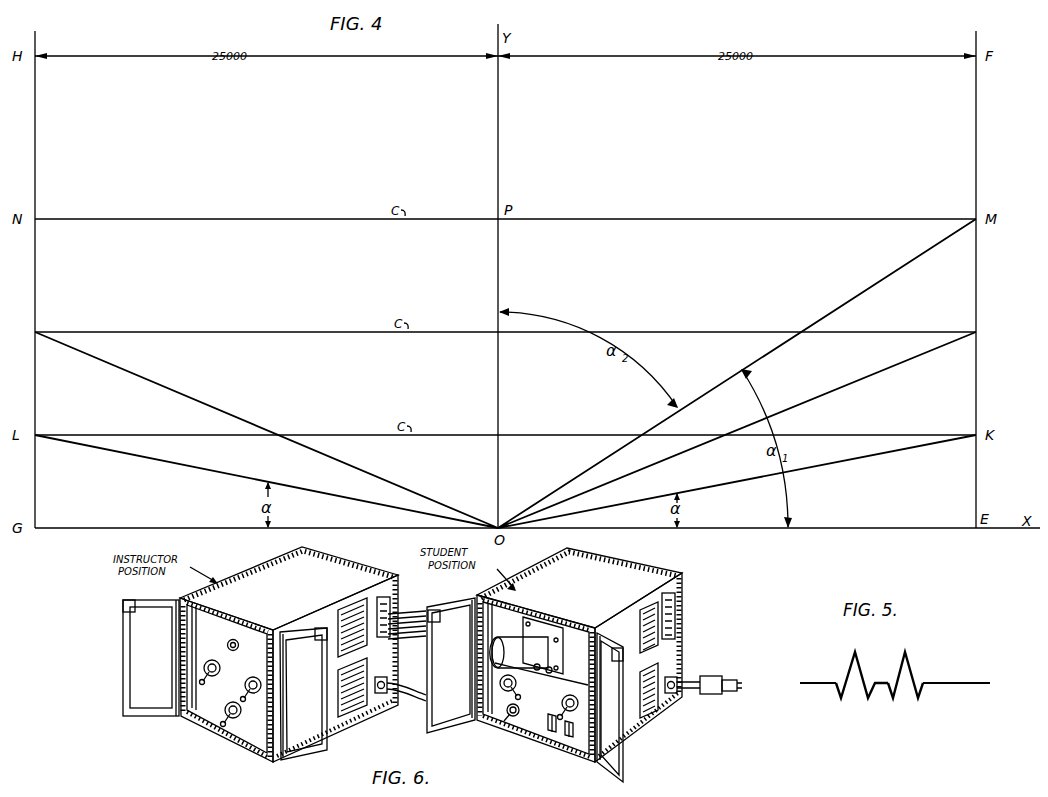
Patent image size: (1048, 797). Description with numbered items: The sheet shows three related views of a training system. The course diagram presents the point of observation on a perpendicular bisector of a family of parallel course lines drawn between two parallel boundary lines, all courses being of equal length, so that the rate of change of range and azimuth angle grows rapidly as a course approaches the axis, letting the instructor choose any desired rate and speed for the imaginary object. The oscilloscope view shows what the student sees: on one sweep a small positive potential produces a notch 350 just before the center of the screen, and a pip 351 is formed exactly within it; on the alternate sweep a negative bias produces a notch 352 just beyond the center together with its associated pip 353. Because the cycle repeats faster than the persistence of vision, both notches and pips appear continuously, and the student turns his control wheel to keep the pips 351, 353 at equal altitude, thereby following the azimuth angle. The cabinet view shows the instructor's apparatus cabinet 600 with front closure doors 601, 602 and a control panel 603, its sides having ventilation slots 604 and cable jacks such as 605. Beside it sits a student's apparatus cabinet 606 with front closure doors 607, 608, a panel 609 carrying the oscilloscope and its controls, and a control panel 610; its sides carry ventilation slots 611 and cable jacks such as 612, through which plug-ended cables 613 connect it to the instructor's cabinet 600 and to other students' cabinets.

In FIG. 5, the notch 350 is at (841, 676).
In FIG. 5, the pip 351 is at (853, 657).
In FIG. 5, the notch 352 is at (923, 683).
In FIG. 5, the pip 353 is at (908, 660).
In FIG. 6, the apparatus cabinet 600 is at (200, 597).
In FIG. 6, the front closure door 601 is at (147, 706).
In FIG. 6, the front closure door 602 is at (303, 744).
In FIG. 6, the control panel 603 is at (205, 626).
In FIG. 6, the ventilation slots 604 is at (338, 679).
In FIG. 6, the cable jack 605 is at (405, 612).
In FIG. 6, the apparatus cabinet 606 is at (660, 575).
In FIG. 6, the front closure door 607 is at (450, 720).
In FIG. 6, the front closure door 608 is at (612, 751).
In FIG. 6, the panel 609 is at (577, 640).
In FIG. 6, the control panel 610 is at (528, 720).
In FIG. 6, the ventilation slots 611 is at (666, 669).
In FIG. 6, the cable jack 612 is at (683, 619).
In FIG. 6, the plug-ended cable 613 is at (405, 637).